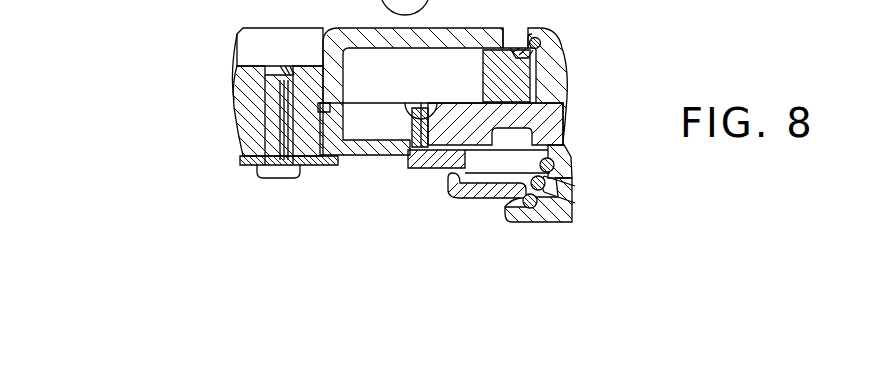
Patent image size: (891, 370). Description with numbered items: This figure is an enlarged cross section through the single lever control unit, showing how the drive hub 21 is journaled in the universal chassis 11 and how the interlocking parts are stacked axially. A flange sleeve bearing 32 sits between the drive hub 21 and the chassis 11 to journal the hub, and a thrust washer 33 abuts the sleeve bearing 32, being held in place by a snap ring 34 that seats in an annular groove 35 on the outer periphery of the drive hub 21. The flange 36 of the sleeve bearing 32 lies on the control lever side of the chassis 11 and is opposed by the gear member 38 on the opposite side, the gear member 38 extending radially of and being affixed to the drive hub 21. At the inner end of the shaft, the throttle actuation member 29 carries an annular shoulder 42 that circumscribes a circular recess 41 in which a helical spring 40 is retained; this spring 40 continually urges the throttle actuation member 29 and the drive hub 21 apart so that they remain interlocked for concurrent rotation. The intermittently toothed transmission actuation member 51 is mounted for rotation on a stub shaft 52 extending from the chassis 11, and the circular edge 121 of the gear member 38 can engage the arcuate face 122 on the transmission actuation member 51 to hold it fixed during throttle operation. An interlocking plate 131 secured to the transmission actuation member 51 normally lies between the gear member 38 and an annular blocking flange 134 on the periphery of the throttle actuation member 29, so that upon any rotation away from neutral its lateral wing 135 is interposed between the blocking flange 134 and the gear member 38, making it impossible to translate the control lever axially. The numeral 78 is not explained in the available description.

The universal chassis 11 is at (367, 33).
The connecting member 78 is at (380, 3).
The drive hub 21 is at (557, 97).
The throttle actuation member 29 is at (575, 219).
The flange sleeve bearing 32 is at (533, 76).
The thrust washer 33 is at (517, 50).
The snap ring 34 is at (540, 46).
The annular groove 35 is at (531, 40).
The flange 36 is at (513, 60).
The gear member 38 is at (462, 120).
The helical spring 40 is at (562, 187).
The circular recess 41 is at (568, 199).
The annular shoulder 42 is at (507, 203).
The transmission actuation member 51 is at (352, 150).
The stub shaft 52 is at (250, 123).
The circular edge 121 is at (415, 114).
The arcuate face 122 is at (430, 105).
The interlocking plate 131 is at (400, 167).
The annular blocking flange 134 is at (448, 184).
The lateral wing 135 is at (443, 170).